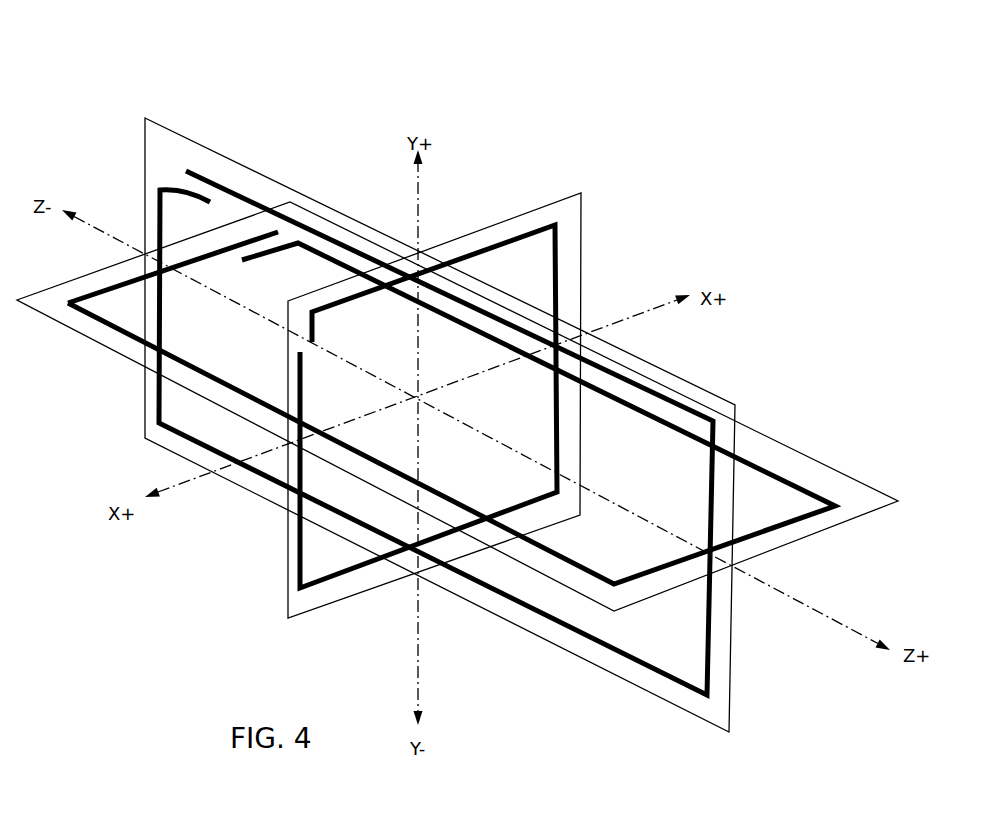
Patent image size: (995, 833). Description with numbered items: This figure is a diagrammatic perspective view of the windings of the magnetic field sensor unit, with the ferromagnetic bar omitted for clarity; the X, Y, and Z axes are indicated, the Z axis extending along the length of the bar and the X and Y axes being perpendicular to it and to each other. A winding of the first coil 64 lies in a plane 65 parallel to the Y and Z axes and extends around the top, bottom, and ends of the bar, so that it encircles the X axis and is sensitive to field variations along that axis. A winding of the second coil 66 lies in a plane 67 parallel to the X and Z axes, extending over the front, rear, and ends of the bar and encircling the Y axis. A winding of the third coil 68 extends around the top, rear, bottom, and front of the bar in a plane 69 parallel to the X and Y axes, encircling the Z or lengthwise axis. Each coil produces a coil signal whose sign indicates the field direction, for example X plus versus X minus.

The first coil 64 is at (240, 195).
The plane 65 is at (187, 147).
The second coil 66 is at (163, 357).
The plane 67 is at (88, 338).
The third coil 68 is at (497, 245).
The third coil plane 69 is at (583, 278).